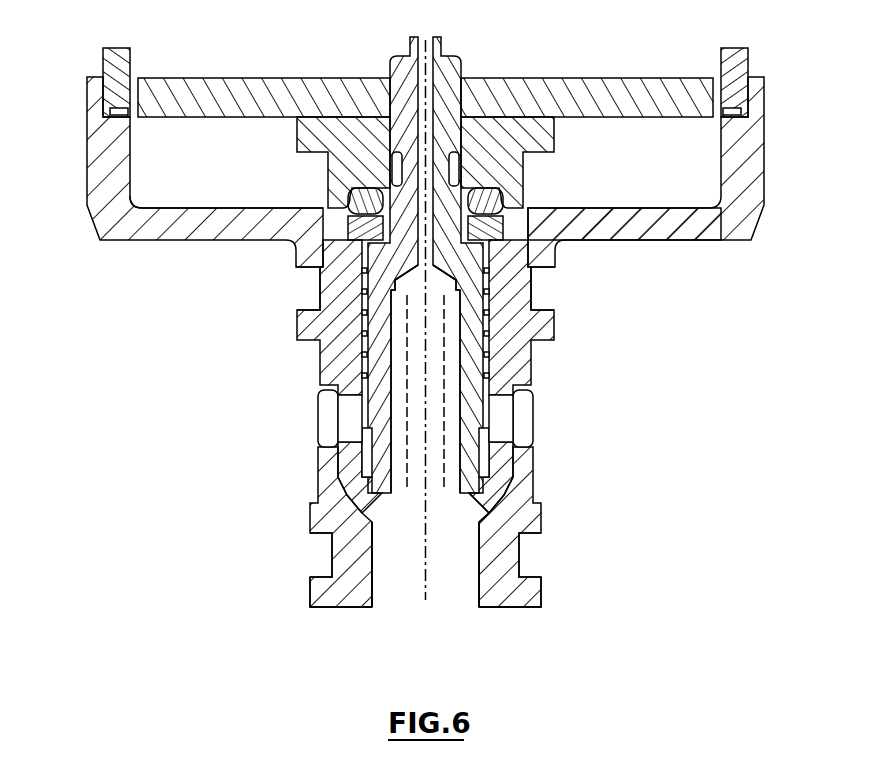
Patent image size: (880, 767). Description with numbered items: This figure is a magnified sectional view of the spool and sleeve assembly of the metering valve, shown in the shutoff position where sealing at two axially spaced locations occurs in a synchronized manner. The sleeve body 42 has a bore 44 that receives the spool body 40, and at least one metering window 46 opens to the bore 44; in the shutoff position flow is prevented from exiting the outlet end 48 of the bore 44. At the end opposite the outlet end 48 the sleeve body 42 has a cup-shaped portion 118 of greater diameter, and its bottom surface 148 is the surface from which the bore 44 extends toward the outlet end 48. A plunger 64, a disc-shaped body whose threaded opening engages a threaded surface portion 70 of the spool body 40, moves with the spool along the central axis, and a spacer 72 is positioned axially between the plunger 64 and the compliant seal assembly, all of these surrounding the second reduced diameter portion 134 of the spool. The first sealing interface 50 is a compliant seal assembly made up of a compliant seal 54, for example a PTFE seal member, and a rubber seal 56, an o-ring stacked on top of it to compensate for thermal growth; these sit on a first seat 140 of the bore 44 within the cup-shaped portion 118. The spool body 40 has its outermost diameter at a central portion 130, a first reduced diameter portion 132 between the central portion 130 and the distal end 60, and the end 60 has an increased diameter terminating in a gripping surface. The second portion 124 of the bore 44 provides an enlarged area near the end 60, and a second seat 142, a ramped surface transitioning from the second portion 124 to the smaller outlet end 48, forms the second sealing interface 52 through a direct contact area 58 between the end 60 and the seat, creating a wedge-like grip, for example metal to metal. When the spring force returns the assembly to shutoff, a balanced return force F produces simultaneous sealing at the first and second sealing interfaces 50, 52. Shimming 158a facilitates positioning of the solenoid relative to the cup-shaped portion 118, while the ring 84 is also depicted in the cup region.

The spool body 40 is at (488, 283).
The sleeve body 42 is at (330, 350).
The bore 44 is at (401, 598).
The metering window 46 is at (332, 437).
The outlet end 48 is at (490, 605).
The first sealing interface 50 is at (606, 187).
The second sealing interface 52 is at (508, 522).
The compliant seal 54 is at (514, 242).
The rubber seal 56 is at (510, 197).
The direct contact area 58 is at (336, 550).
The end of the spool body 60 is at (490, 556).
The plunger 64 is at (600, 84).
The threaded surface portion 70 is at (390, 100).
The spacer 72 is at (519, 161).
The seal ring 84 is at (120, 62).
The cup-shaped portion 118 is at (750, 175).
The second portion of the bore 124 is at (345, 475).
The central portion 130 is at (356, 372).
The first reduced diameter portion 132 is at (383, 450).
The second reduced diameter portion 134 is at (450, 62).
The first seat 140 is at (335, 270).
The second seat 142 is at (322, 521).
The bottom surface 148 is at (177, 207).
The shimming 158a is at (110, 119).
The balanced return force F is at (305, 66).